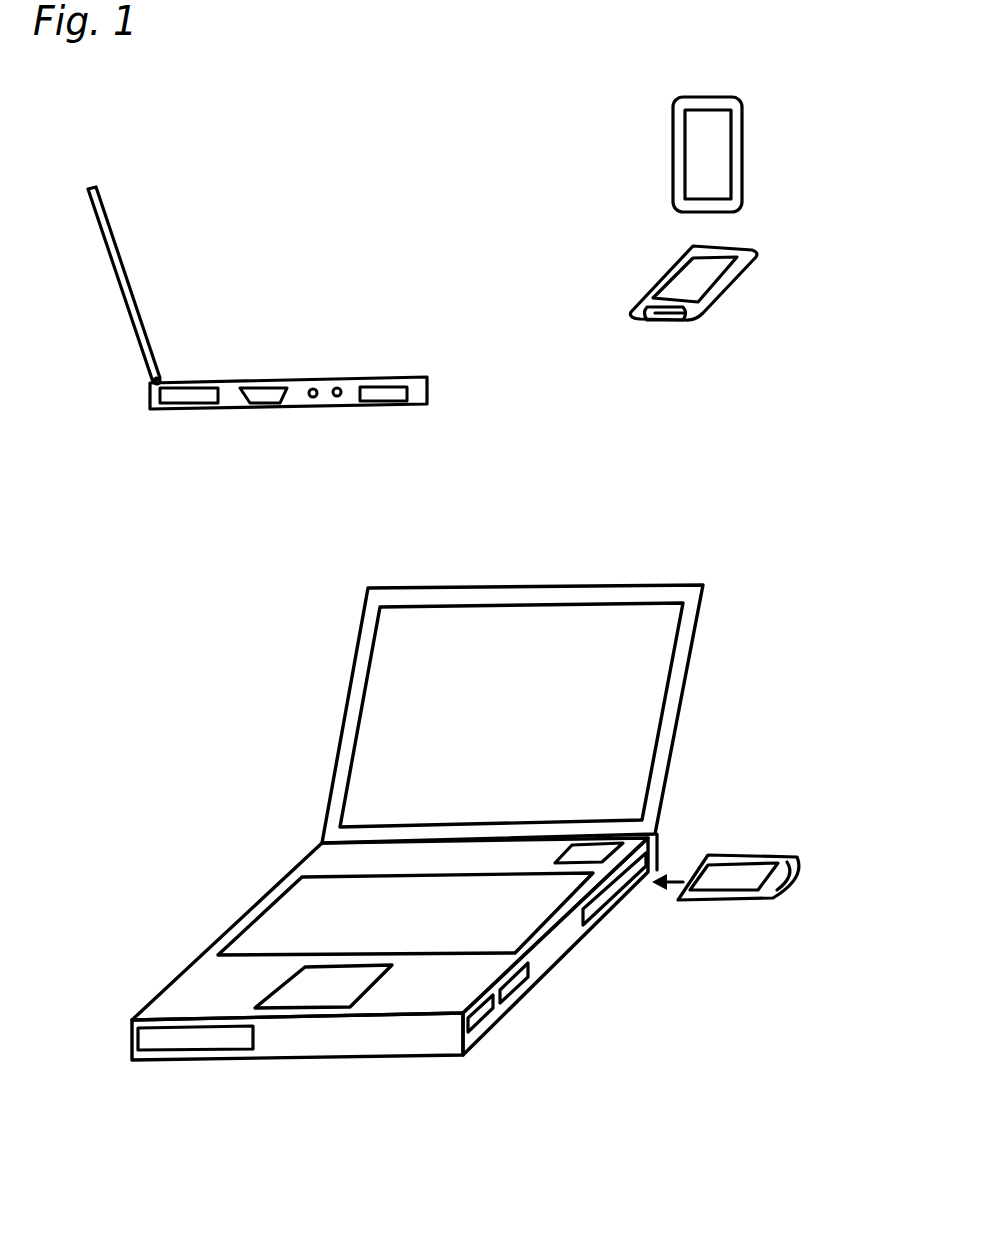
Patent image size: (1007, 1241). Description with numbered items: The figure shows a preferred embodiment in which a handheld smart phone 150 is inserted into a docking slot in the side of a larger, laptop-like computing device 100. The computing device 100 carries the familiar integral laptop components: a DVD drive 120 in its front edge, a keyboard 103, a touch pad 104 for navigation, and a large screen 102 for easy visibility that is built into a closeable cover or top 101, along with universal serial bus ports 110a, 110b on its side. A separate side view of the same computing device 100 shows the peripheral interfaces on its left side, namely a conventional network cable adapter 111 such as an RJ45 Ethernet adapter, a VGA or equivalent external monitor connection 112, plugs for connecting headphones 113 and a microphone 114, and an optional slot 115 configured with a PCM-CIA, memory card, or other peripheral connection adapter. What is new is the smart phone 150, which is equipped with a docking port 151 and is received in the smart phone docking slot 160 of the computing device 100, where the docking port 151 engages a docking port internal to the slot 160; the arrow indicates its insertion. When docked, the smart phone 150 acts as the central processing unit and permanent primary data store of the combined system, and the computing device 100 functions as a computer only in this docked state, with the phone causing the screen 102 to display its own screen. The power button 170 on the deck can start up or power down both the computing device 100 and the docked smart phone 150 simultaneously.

The computing device 100 is at (133, 1062).
The closeable cover or top 101 is at (510, 588).
The screen 102 is at (580, 605).
The keyboard 103 is at (263, 915).
The touch pad 104 is at (282, 986).
The universal serial bus (USB) port 110a is at (485, 1019).
The universal serial bus (USB) port 110b is at (520, 987).
The network cable adapter 111 is at (183, 405).
The external monitor connection 112 is at (262, 405).
The headphone plug 113 is at (306, 405).
The microphone plug 114 is at (337, 405).
The slot 115 is at (383, 403).
The DVD drive 120 is at (198, 1050).
The smart phone 150 is at (673, 147).
The docking port 151 is at (653, 320).
The smart phone docking slot 160 is at (590, 922).
The power button 170 is at (604, 843).